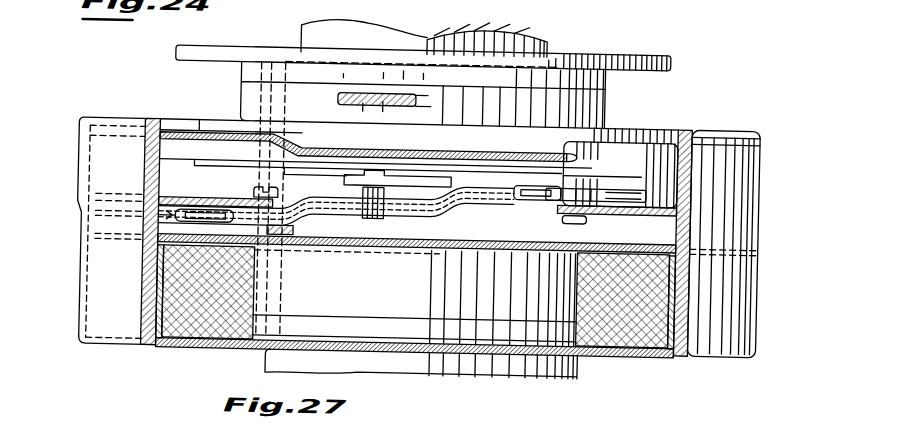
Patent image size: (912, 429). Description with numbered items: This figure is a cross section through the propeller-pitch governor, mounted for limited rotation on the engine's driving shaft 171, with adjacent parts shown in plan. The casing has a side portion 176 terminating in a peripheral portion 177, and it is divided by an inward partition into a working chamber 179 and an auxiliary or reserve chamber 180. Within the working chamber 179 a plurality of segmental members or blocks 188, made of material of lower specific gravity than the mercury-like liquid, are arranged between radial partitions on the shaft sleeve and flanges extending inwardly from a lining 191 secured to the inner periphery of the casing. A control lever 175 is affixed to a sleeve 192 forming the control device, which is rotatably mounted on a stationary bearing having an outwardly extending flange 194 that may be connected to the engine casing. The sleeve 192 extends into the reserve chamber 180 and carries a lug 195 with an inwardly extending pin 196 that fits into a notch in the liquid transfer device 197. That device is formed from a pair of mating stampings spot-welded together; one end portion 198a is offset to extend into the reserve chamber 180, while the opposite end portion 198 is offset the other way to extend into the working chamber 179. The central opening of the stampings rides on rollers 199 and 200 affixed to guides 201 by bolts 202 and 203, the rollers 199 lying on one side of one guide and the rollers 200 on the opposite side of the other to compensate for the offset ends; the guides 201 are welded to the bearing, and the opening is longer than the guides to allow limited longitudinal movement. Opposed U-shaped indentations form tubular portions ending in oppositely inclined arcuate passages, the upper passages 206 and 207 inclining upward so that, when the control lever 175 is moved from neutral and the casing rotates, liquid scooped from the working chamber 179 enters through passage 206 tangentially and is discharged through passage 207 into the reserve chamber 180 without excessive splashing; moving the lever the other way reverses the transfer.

The driving shaft 171 is at (388, 23).
The control lever 175 is at (333, 92).
The side portion 176 is at (140, 347).
The peripheral portion 177 is at (78, 267).
The working chamber 179 is at (218, 320).
The auxiliary or reserve chamber 180 is at (678, 170).
The segmental members or blocks 188 is at (217, 334).
The lining 191 is at (178, 328).
The sleeve 192 is at (257, 99).
The outwardly extending flange 194 is at (628, 41).
The lug 195 is at (393, 173).
The inwardly extending pin 196 is at (383, 203).
The liquid transfer device 197 is at (440, 242).
The end portion 198 is at (135, 226).
The end portion 198a is at (490, 183).
The rollers 199 is at (300, 240).
The rollers 200 is at (598, 171).
The guides 201 is at (293, 198).
The bolt 202 is at (252, 185).
The bolt 203 is at (577, 212).
The passage 206 is at (205, 206).
The passage 207 is at (513, 190).